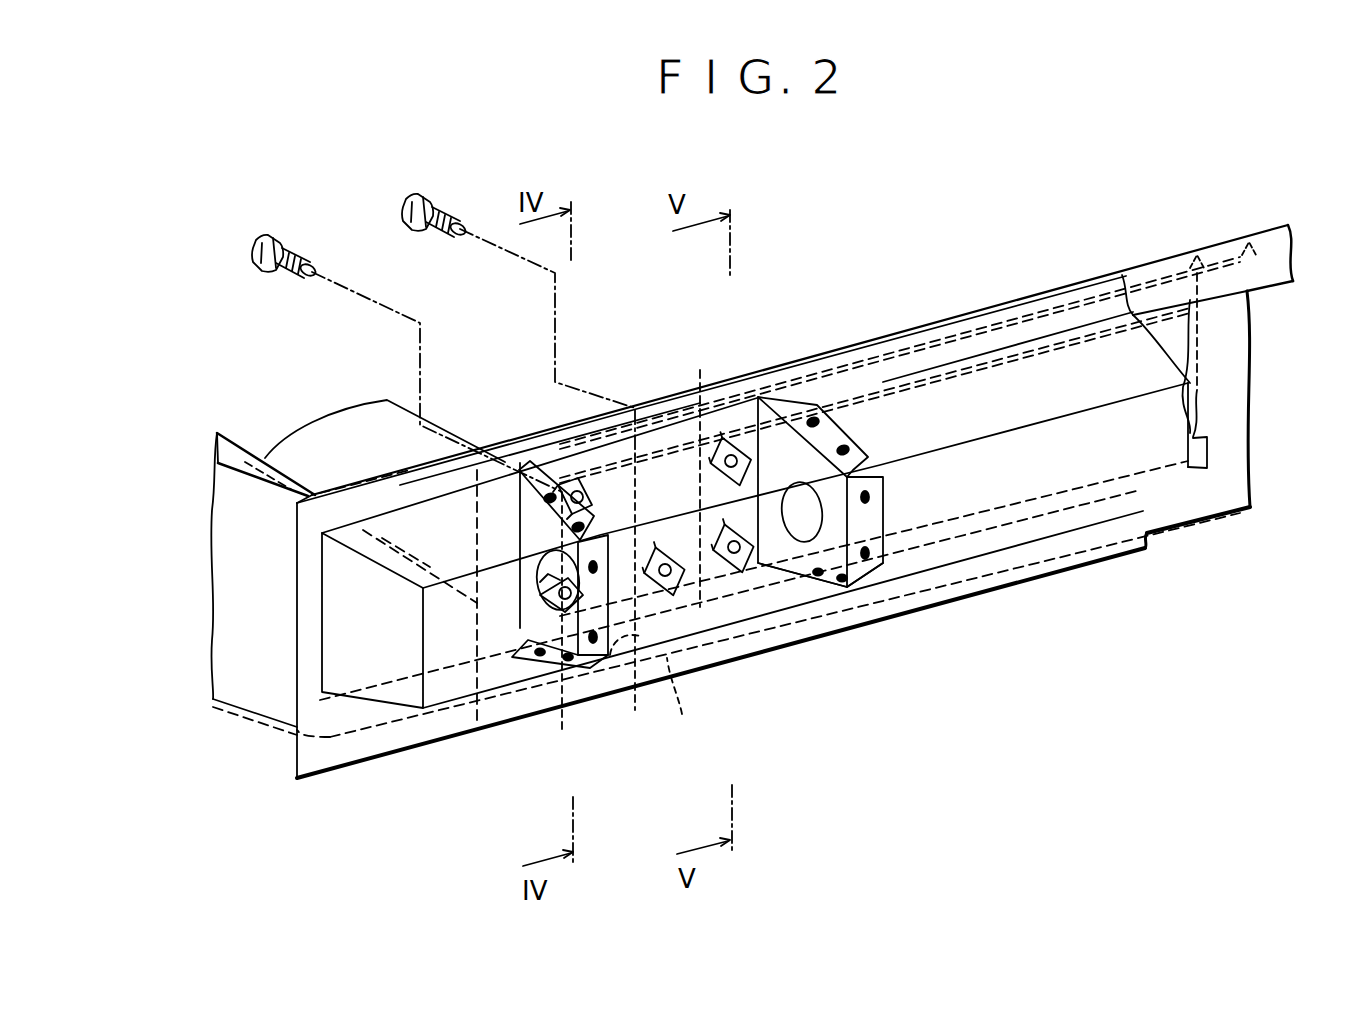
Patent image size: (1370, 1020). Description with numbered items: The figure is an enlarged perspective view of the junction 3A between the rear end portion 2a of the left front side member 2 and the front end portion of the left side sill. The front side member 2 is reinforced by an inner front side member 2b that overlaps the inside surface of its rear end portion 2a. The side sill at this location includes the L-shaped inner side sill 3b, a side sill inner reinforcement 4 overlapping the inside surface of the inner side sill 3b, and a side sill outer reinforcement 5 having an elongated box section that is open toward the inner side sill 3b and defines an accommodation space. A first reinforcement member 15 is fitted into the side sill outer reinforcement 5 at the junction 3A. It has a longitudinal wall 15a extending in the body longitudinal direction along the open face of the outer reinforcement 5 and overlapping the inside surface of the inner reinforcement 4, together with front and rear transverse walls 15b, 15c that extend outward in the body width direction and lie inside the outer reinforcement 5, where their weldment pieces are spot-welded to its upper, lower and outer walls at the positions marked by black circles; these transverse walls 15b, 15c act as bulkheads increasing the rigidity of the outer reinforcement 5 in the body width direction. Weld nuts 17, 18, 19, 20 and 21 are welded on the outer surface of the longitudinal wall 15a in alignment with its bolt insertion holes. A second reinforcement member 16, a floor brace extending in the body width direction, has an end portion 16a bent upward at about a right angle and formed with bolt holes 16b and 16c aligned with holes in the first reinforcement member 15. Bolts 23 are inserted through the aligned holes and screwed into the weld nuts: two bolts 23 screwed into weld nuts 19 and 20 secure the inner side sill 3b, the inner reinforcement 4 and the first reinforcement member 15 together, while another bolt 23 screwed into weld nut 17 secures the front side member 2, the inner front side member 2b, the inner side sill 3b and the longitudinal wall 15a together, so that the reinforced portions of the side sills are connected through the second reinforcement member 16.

The front side member 2 is at (252, 722).
The rear end portion of the front side member 2a is at (237, 570).
The inner front side member 2b is at (502, 430).
The junction 3A is at (660, 380).
The inner side sill 3b is at (1257, 343).
The side sill inner reinforcement 4 is at (1207, 398).
The side sill outer reinforcement 5 is at (1193, 438).
The first reinforcement member 15 is at (879, 480).
The longitudinal wall 15a is at (738, 515).
The front transverse wall 15b is at (537, 585).
The rear transverse wall 15c is at (785, 453).
The second reinforcement member 16 is at (343, 428).
The end portion of the second reinforcement member 16a is at (639, 593).
The bolt hole 16b is at (578, 628).
The bolt hole 16c is at (695, 554).
The weld nut 17 is at (575, 480).
The weld nut 18 is at (540, 605).
The weld nut 19 is at (730, 435).
The weld nut 20 is at (753, 562).
The weld nut 21 is at (680, 580).
The bolts 23 is at (408, 204).